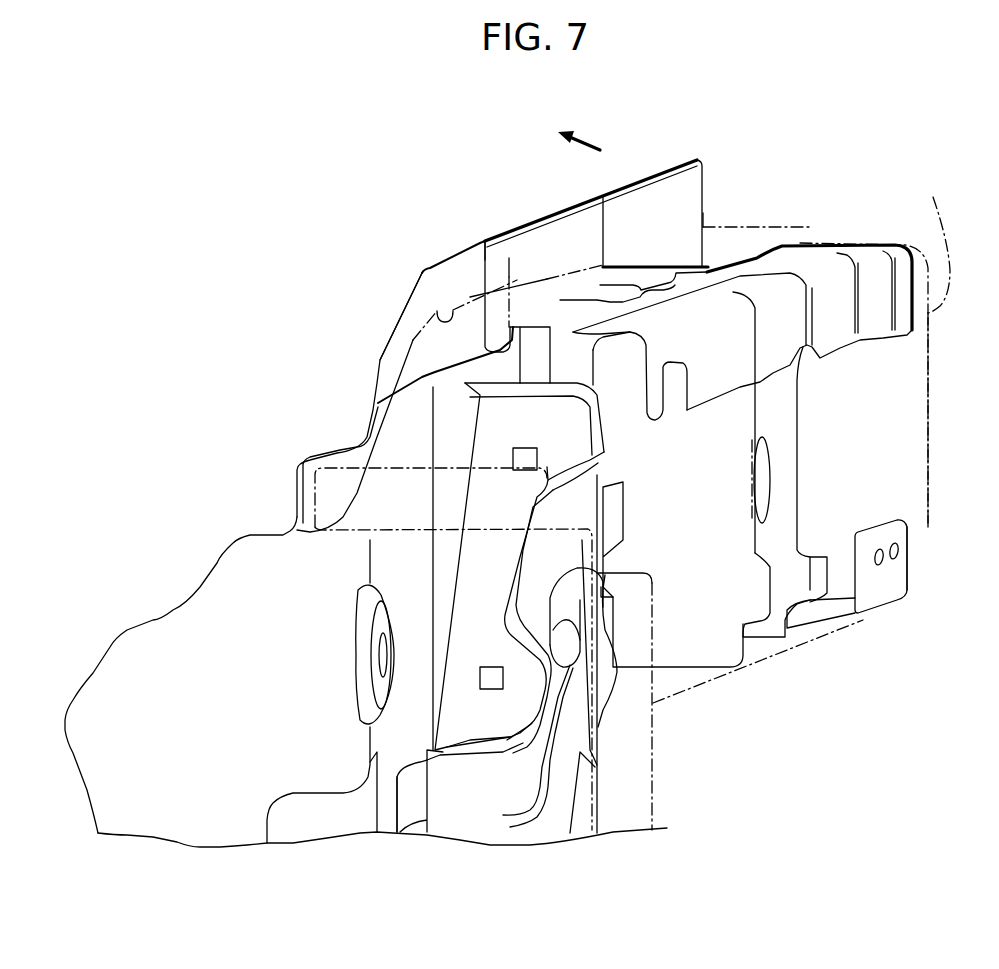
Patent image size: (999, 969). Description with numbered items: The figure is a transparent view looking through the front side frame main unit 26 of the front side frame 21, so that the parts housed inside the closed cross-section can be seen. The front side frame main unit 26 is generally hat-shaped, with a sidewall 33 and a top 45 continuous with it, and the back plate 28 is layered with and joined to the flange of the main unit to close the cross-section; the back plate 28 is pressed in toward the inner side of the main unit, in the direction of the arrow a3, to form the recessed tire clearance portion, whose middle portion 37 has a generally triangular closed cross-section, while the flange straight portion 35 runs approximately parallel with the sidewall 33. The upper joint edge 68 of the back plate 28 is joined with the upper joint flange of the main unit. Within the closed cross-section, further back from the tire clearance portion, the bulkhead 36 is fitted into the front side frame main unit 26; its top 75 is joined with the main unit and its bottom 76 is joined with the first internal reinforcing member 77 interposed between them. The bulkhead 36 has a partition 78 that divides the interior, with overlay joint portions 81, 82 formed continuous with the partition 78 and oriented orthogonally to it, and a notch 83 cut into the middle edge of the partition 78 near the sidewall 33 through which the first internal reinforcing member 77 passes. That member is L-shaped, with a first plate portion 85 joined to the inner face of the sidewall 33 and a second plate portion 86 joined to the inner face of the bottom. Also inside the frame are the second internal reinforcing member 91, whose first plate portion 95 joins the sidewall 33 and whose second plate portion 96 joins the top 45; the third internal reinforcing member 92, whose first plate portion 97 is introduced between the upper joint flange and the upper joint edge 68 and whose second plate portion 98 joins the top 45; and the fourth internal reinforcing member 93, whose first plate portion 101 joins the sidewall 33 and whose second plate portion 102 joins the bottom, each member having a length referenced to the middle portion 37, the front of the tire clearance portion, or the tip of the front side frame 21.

The front side frame 21 is at (353, 213).
The front side frame main unit 26 is at (932, 348).
The sidewall 33 is at (956, 348).
The back plate 28 is at (745, 494).
The flange straight portion 35 is at (507, 357).
The bulkhead 36 is at (460, 435).
The middle portion 37 is at (407, 293).
The top 45 is at (752, 227).
The upper joint edge 68 is at (675, 193).
The top 75 is at (607, 440).
The bottom 76 is at (508, 760).
The first internal reinforcing member 77 is at (632, 547).
The partition 78 is at (477, 585).
The overlay joint portion 81 is at (507, 385).
The overlay joint portion 82 is at (532, 742).
The notch 83 is at (532, 578).
The first plate portion 85 is at (553, 612).
The second plate portion 86 is at (465, 783).
The second internal reinforcing member 91 is at (823, 253).
The third internal reinforcing member 92 is at (540, 335).
The fourth internal reinforcing member 93 is at (880, 602).
The first plate portion 95 is at (837, 333).
The second plate portion 96 is at (783, 267).
The first plate portion 97 is at (613, 227).
The second plate portion 98 is at (638, 278).
The first plate portion 101 is at (908, 535).
The second plate portion 102 is at (821, 630).
The arrow a3 is at (566, 129).